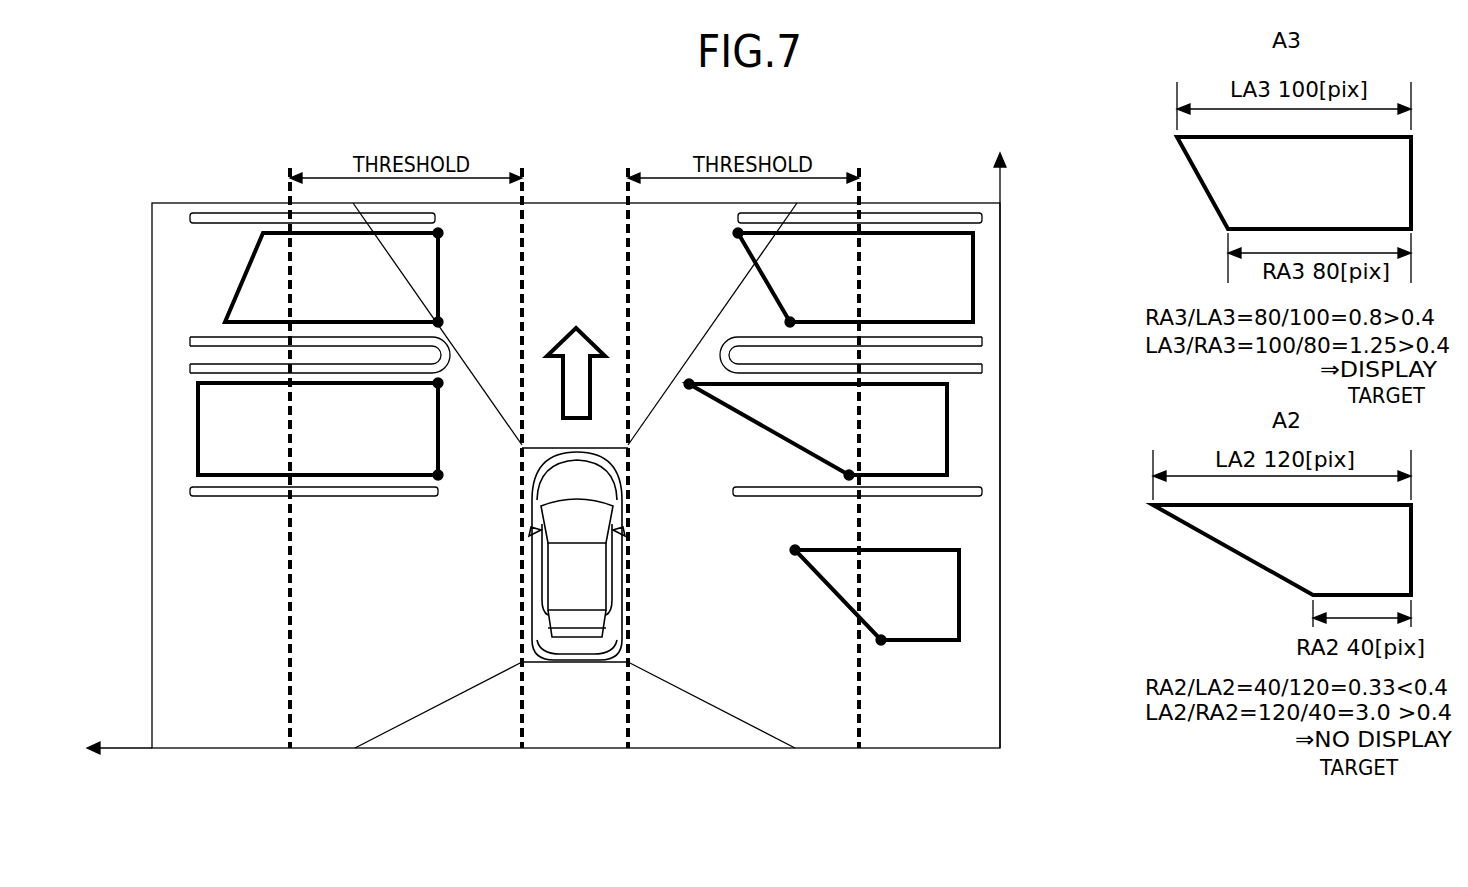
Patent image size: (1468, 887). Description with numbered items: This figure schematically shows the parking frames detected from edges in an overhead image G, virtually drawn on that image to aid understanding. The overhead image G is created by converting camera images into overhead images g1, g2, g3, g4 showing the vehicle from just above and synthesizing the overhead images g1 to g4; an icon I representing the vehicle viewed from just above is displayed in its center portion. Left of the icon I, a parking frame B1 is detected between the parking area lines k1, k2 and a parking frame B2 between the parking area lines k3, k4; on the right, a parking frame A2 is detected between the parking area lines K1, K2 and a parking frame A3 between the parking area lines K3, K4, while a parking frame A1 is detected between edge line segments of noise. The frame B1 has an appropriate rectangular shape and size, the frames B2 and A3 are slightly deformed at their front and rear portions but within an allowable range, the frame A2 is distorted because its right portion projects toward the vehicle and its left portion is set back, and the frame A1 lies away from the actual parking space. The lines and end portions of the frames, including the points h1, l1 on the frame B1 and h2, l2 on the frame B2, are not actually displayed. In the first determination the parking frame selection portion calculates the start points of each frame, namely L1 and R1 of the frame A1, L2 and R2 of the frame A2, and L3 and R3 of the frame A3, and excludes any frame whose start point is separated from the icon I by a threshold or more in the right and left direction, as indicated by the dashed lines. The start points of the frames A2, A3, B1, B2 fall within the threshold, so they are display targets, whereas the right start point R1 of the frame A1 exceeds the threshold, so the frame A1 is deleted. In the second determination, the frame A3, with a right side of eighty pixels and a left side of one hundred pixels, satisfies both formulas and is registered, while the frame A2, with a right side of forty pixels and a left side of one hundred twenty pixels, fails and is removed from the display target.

The icon I is at (605, 660).
The parking area line k1 is at (188, 491).
The parking area line k2 is at (188, 370).
The parking area line k3 is at (188, 343).
The parking area line k4 is at (188, 222).
The parking area line K1 is at (982, 492).
The parking area line K2 is at (982, 371).
The parking area line K3 is at (982, 344).
The parking area line K4 is at (982, 219).
The parking frame B1 is at (198, 430).
The parking frame B2 is at (245, 278).
The parking frame A1 is at (959, 600).
The parking frame A2 is at (947, 437).
The parking frame A3 is at (973, 283).
The upper end point of region B1 h1 is at (438, 383).
The start point of parking frame B1 l1 is at (438, 475).
The upper end point of region B2 h2 is at (438, 233).
The start point of parking frame B2 l2 is at (438, 322).
The left start point of parking frame A1 L1 is at (795, 550).
The right start point of parking frame A1 R1 is at (881, 640).
The left start point of parking frame A2 L2 is at (689, 384).
The right start point of parking frame A2 R2 is at (849, 475).
The left start point of parking frame A3 L3 is at (738, 233).
The right start point of parking frame A3 R3 is at (790, 322).
The overhead image g1 is at (548, 232).
The overhead image G is at (612, 232).
The overhead image g2 is at (540, 712).
The overhead image g3 is at (237, 620).
The overhead image g4 is at (958, 533).